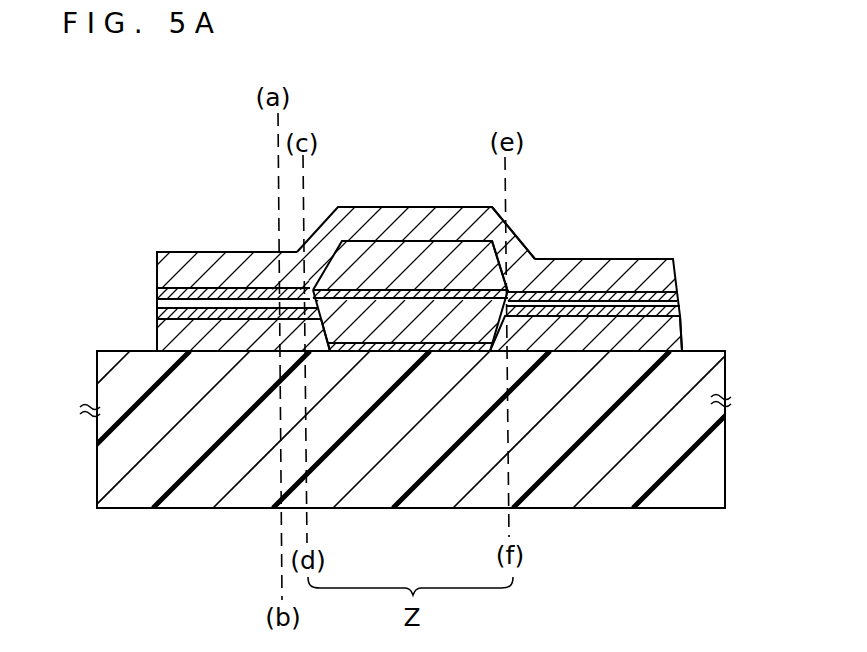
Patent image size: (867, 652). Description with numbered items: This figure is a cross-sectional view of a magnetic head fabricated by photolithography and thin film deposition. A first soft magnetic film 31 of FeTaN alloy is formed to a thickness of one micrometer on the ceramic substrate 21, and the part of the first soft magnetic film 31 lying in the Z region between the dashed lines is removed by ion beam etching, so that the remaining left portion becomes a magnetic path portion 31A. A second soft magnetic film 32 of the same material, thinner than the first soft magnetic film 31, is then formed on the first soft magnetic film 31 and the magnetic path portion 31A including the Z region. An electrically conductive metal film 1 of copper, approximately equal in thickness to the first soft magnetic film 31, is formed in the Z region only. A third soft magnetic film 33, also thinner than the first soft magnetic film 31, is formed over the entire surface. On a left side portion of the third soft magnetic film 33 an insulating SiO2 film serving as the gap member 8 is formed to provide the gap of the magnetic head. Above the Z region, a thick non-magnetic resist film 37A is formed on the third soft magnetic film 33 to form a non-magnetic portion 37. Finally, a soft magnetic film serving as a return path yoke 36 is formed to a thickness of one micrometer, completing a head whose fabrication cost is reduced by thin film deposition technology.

The electrically conductive metal film 1 is at (363, 305).
The gap member 8 is at (157, 292).
The ceramic substrate 21 is at (687, 490).
The first soft magnetic film 31 is at (672, 337).
The magnetic path portion 31A is at (156, 330).
The second soft magnetic film 32 is at (157, 316).
The third soft magnetic film 33 is at (157, 306).
The return path yoke 36 is at (532, 243).
The non-magnetic portion 37 is at (421, 253).
The non-magnetic resist film 37A is at (366, 258).